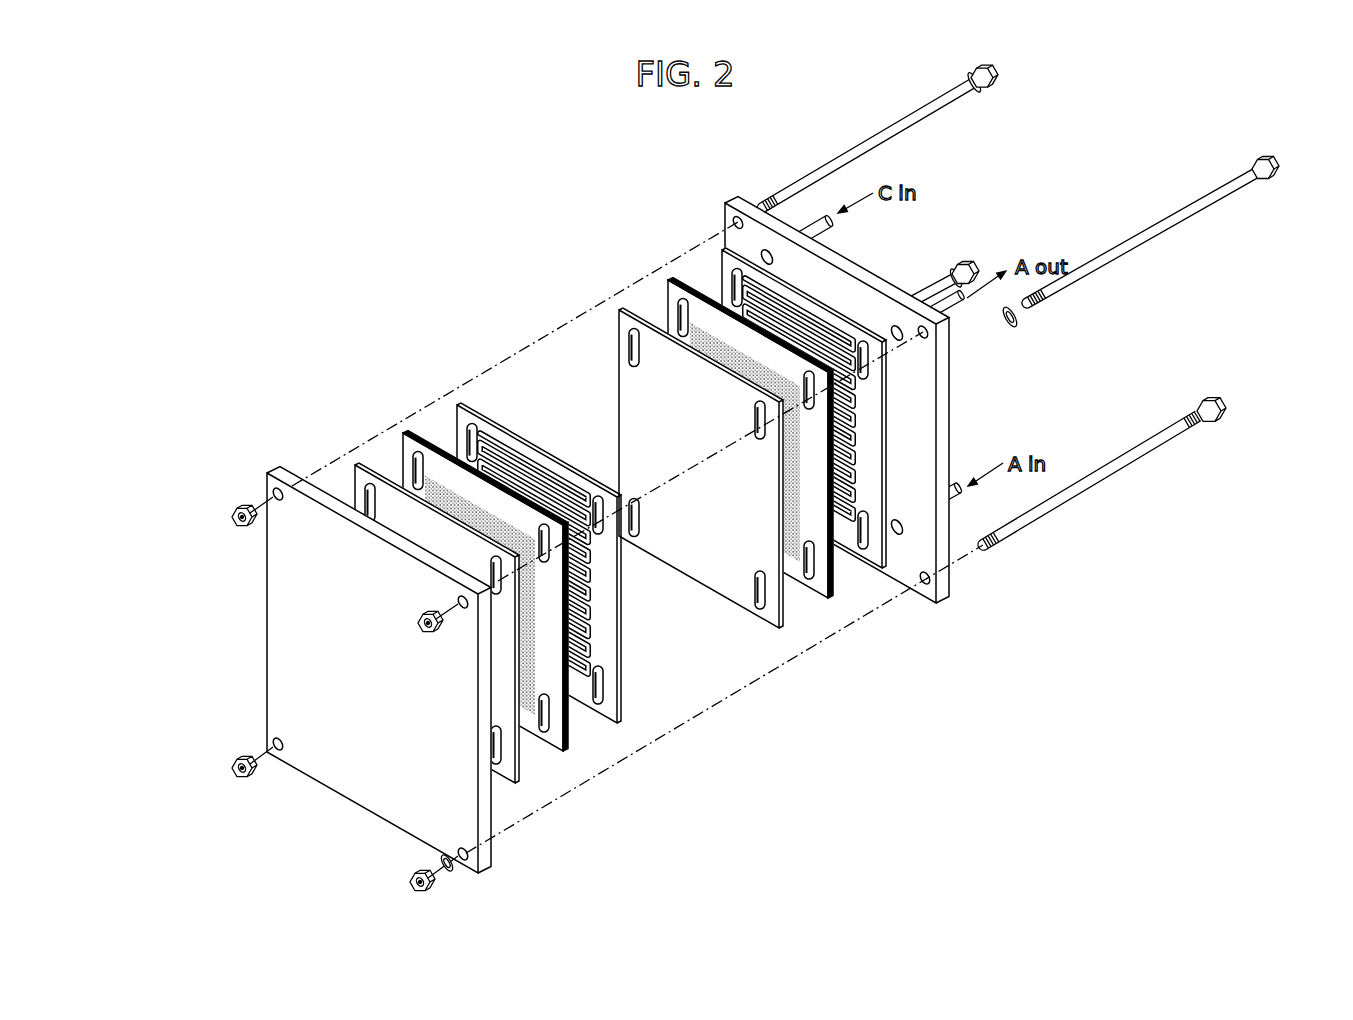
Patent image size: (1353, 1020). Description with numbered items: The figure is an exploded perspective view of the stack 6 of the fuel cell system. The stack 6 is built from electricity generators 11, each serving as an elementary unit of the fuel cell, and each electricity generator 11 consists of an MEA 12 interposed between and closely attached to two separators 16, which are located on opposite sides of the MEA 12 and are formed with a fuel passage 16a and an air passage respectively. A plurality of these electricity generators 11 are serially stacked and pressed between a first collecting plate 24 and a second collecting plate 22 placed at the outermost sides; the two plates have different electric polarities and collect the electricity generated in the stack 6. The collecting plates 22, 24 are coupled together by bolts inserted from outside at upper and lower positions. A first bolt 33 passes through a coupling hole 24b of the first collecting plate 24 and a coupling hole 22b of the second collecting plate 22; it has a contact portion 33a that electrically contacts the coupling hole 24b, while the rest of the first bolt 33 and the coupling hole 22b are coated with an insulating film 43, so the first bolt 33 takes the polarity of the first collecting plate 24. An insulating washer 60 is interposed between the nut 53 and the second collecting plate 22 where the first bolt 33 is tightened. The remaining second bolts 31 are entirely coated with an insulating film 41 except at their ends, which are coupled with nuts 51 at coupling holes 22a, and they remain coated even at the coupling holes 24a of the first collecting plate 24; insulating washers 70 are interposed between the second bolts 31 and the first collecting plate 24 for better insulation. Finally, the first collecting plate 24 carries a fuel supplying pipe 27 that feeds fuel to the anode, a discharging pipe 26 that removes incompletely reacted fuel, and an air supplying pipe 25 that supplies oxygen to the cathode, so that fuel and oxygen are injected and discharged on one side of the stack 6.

The stack 6 is at (656, 252).
The electricity generator 11 is at (668, 548).
The MEA 12 is at (565, 752).
The separator 16 is at (513, 782).
The fuel passage 16a is at (876, 528).
The second collecting plate 22 is at (312, 520).
The coupling hole 22a is at (273, 492).
The coupling hole 22b is at (452, 856).
The first collecting plate 24 is at (742, 200).
The coupling hole 24a is at (924, 326).
The coupling hole 24b is at (934, 580).
The air supplying pipe 25 is at (818, 216).
The discharging pipe 26 is at (945, 307).
The fuel supplying pipe 27 is at (962, 493).
The second bolt 31 is at (994, 82).
The first bolt 33 is at (1220, 424).
The contact portion 33a is at (1198, 422).
The insulating film 41 is at (907, 118).
The insulating film 43 is at (1093, 487).
The nut 51 is at (232, 518).
The nut 53 is at (415, 886).
The insulating washer 60 is at (452, 878).
The insulating washer 70 is at (972, 78).